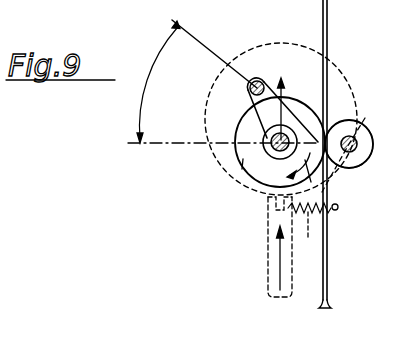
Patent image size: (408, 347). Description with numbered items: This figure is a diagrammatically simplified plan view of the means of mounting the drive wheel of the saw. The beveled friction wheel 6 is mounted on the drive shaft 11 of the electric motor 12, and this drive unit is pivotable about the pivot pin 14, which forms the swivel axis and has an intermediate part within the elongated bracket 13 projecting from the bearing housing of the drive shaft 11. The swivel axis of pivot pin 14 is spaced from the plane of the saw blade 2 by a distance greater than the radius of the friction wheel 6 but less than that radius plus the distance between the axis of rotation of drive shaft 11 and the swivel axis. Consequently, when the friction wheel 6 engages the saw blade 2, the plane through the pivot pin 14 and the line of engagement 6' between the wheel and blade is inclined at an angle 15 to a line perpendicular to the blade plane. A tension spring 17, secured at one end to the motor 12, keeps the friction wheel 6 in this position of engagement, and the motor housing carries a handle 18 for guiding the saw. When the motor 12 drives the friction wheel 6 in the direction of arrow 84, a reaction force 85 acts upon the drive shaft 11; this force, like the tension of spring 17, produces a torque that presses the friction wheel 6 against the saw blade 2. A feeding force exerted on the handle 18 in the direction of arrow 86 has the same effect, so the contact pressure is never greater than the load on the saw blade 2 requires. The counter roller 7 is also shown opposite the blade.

The saw blade 2 is at (332, 263).
The friction wheel 6 is at (261, 142).
The line of engagement 6' is at (358, 131).
The counter roller 7 is at (366, 162).
The drive shaft 11 is at (262, 163).
The electric motor 12 is at (340, 66).
The elongated bracket 13 is at (251, 115).
The pivot pin 14 is at (262, 80).
The angle 15 is at (140, 106).
The tension spring 17 is at (313, 229).
The handle 18 is at (267, 243).
The arrow 84 is at (326, 181).
The reaction force 85 is at (284, 106).
The arrow 86 is at (280, 271).